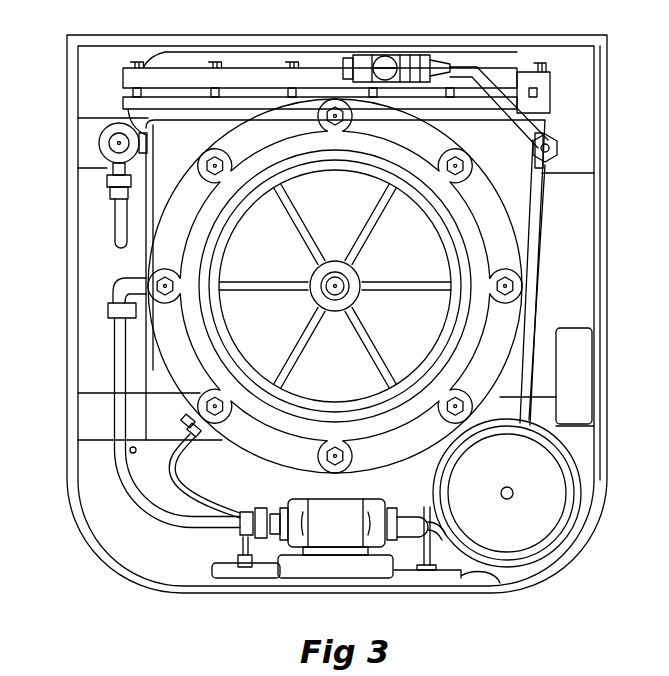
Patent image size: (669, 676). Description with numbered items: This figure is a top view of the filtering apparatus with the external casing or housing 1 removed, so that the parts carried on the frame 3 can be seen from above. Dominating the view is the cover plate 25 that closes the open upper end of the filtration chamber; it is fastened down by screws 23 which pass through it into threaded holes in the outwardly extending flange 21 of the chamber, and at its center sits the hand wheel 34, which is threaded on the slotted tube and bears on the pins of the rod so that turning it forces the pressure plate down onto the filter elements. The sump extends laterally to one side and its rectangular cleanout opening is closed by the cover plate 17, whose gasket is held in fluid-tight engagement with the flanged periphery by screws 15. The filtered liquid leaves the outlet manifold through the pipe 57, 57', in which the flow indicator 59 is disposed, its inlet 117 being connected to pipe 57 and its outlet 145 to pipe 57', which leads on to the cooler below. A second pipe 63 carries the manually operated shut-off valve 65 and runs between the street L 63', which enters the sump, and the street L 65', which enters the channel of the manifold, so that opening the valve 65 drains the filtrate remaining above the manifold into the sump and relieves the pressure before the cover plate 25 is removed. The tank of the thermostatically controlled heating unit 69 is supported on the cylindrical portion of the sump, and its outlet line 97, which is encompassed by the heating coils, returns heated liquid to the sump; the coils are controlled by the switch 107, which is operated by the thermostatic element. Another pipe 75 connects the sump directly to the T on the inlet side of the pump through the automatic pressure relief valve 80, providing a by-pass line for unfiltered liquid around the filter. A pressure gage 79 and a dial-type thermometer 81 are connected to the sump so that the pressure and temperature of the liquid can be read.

The external casing or housing 1 is at (607, 292).
The frame 3 is at (607, 232).
The screws 15 is at (123, 72).
The cover plate 17 is at (336, 80).
The outwardly extending flange 21 is at (205, 170).
The screws 23 is at (497, 284).
The cover plate 25 is at (335, 286).
The hand wheel 34 is at (294, 366).
The pipe 57 is at (164, 403).
The pipe 57' is at (445, 539).
The flow indicator 59 is at (335, 538).
The second pipe 63 is at (499, 81).
The street L 63' is at (561, 167).
The manually operated shut-off valve 65 is at (401, 48).
The street L 65' is at (327, 46).
The thermostatically controlled heating unit 69 is at (507, 493).
The pipe 75 is at (116, 228).
The pressure gage 79 is at (212, 572).
The automatic pressure relief valve 80 is at (99, 143).
The dial-type thermometer 81 is at (500, 584).
The outlet line 97 is at (540, 334).
The switch 107 is at (575, 376).
The inlet 117 is at (267, 506).
The outlet 145 is at (404, 505).